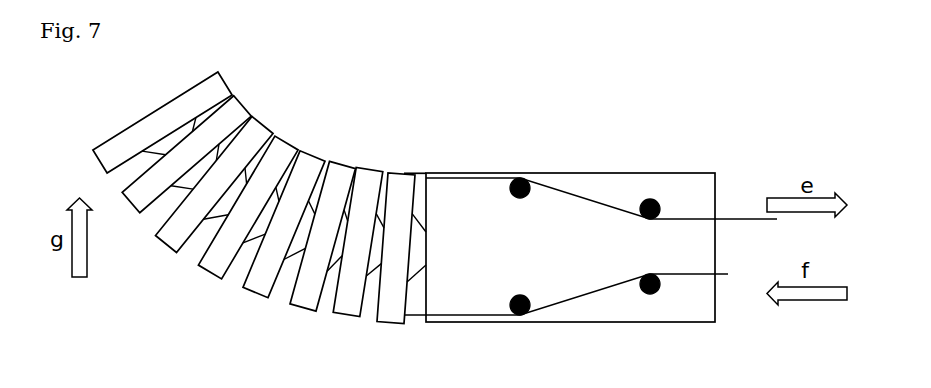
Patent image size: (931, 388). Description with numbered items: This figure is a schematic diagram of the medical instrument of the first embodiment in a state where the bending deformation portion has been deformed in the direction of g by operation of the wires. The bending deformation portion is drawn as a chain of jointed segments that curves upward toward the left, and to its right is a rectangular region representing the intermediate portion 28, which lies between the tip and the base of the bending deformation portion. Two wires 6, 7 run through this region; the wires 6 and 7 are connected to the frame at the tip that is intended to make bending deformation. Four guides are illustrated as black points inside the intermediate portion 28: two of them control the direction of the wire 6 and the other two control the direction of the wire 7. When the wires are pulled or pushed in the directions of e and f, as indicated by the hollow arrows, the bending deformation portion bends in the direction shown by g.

The wire 6 is at (556, 188).
The wire 7 is at (555, 307).
The intermediate portion 28 is at (670, 185).